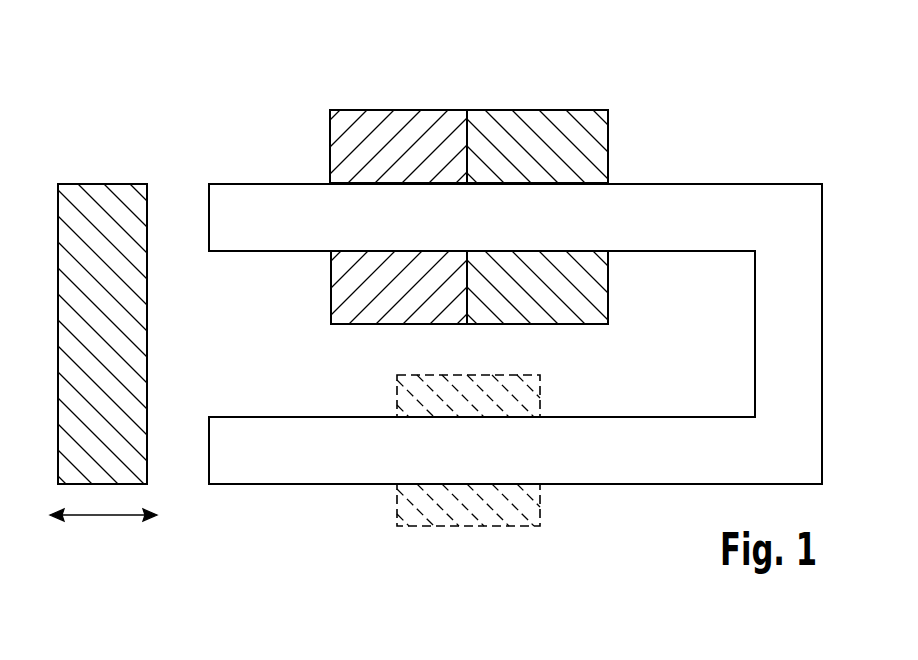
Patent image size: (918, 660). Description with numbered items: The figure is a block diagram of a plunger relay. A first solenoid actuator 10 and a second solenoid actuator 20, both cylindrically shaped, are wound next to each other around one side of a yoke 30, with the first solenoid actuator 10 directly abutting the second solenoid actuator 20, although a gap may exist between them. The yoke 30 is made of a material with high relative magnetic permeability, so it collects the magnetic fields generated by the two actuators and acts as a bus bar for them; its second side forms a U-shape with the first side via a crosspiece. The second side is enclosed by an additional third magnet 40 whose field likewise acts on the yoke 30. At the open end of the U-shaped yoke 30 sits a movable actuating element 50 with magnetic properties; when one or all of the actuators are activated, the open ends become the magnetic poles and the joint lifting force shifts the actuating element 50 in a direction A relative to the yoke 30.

The first solenoid actuator 10 is at (400, 128).
The second solenoid actuator 20 is at (551, 128).
The yoke 30 is at (762, 200).
The third magnet 40 is at (472, 515).
The movable actuating element 50 is at (105, 202).
The direction A is at (103, 517).